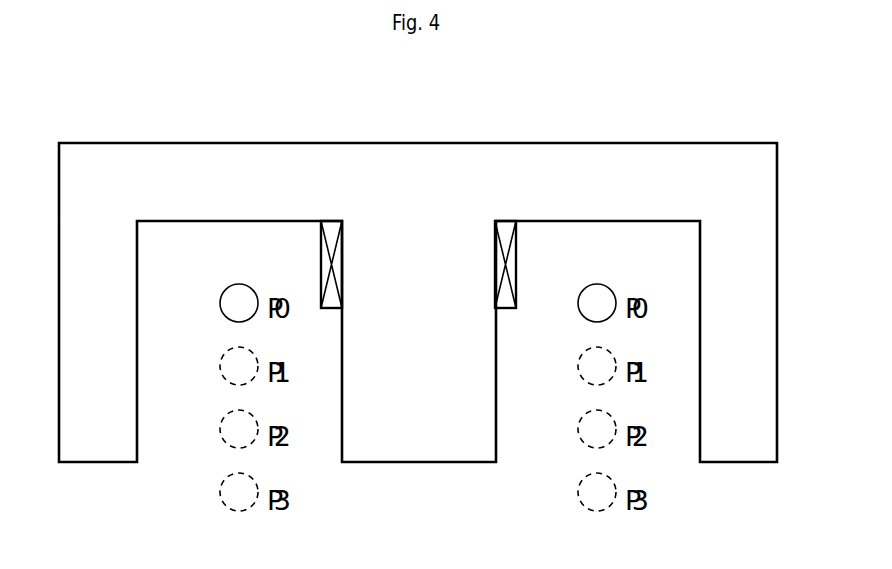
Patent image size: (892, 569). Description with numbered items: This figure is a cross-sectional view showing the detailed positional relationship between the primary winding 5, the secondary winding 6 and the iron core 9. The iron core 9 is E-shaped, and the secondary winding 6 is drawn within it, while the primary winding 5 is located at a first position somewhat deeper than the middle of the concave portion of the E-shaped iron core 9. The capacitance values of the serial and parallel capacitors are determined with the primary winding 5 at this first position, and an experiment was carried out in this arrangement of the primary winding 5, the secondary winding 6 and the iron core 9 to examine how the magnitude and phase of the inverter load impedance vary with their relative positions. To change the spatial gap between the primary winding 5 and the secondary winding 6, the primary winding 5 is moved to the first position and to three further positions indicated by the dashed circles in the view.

The primary winding 5 is at (227, 287).
The secondary winding 6 is at (322, 262).
The iron core 9 is at (729, 143).